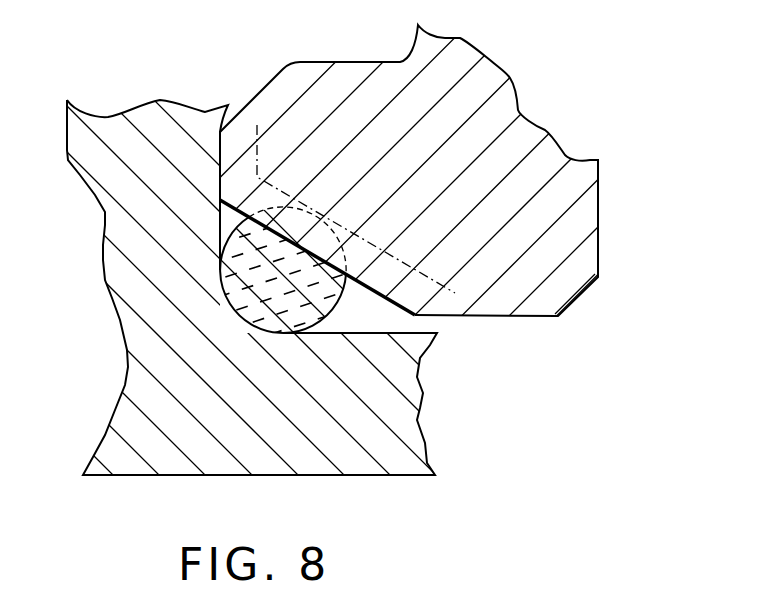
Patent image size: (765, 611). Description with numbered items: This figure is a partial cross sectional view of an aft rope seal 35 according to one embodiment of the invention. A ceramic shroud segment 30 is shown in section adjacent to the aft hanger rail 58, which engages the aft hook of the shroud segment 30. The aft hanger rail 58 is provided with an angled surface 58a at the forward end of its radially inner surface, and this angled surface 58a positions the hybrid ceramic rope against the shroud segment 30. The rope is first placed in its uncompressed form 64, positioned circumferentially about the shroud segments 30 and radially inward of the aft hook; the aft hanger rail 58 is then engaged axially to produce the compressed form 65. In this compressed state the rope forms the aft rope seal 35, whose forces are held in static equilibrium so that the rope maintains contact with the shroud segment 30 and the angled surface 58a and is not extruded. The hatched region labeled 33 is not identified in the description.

The shroud segment 30 is at (153, 172).
The clamp member 33 is at (473, 110).
The aft rope seal 35 is at (234, 320).
The aft hanger rail 58 is at (366, 172).
The angled surface 58a is at (372, 299).
The uncompressed form 64 is at (243, 236).
The compressed form 65 is at (227, 237).